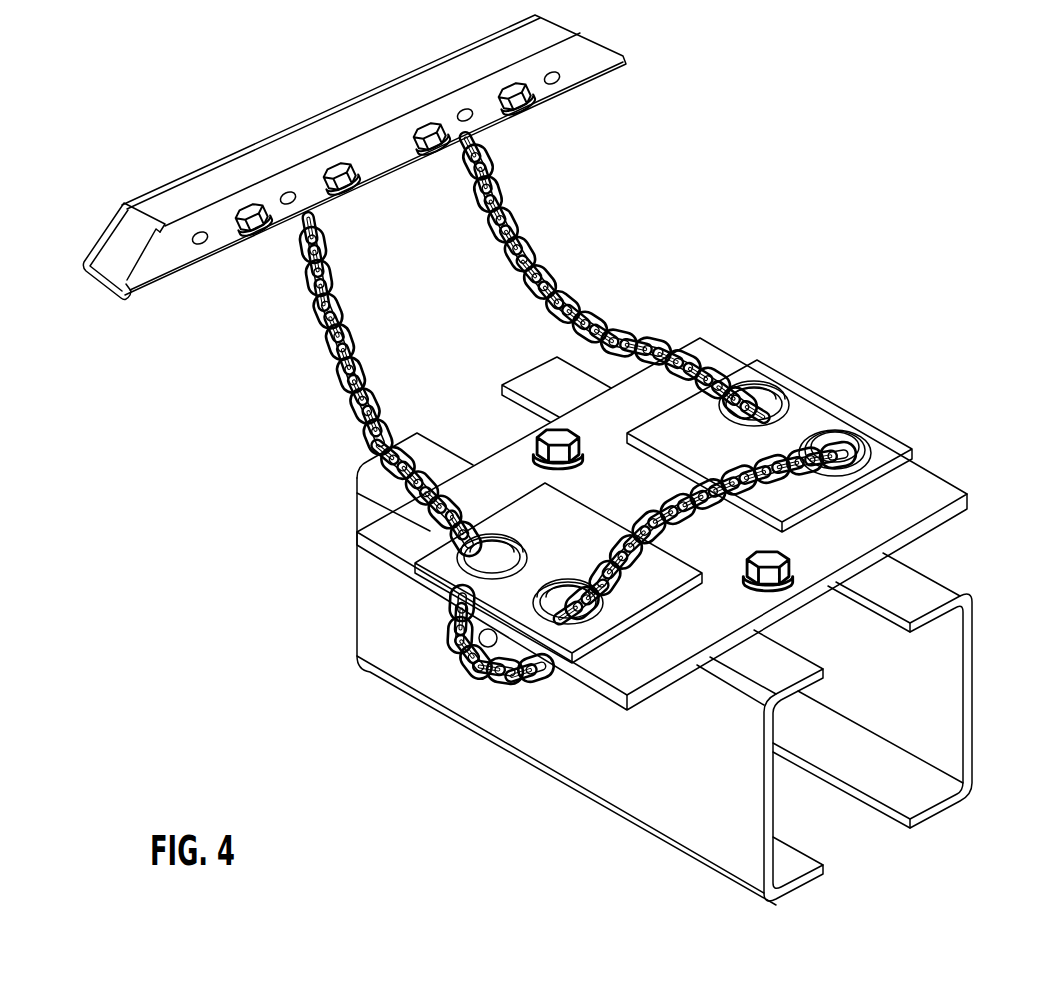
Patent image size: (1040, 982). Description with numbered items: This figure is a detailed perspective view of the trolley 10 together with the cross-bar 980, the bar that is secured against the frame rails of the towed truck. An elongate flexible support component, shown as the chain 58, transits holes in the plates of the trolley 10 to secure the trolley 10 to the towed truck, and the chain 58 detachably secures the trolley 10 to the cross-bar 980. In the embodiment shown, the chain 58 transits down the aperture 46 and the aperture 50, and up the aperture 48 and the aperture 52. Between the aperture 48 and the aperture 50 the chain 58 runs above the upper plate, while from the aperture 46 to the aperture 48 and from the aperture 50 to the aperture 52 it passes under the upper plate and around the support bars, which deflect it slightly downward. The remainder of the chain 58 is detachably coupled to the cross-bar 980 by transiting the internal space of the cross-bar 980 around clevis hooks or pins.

The trolley 10 is at (881, 528).
The aperture 46 is at (786, 388).
The aperture 48 is at (876, 452).
The aperture 50 is at (545, 632).
The aperture 52 is at (452, 567).
The chain 58 is at (318, 364).
The cross-bar 980 is at (300, 110).